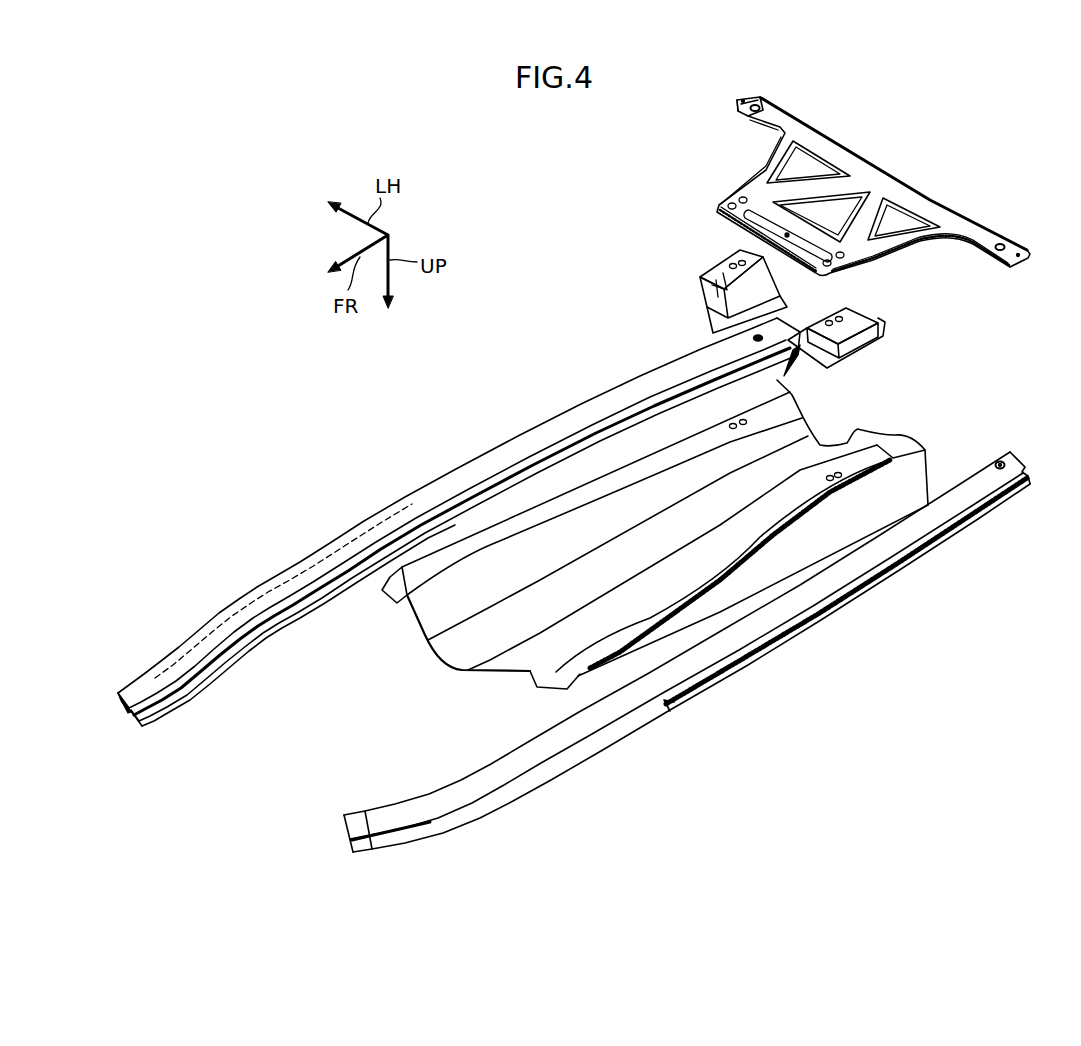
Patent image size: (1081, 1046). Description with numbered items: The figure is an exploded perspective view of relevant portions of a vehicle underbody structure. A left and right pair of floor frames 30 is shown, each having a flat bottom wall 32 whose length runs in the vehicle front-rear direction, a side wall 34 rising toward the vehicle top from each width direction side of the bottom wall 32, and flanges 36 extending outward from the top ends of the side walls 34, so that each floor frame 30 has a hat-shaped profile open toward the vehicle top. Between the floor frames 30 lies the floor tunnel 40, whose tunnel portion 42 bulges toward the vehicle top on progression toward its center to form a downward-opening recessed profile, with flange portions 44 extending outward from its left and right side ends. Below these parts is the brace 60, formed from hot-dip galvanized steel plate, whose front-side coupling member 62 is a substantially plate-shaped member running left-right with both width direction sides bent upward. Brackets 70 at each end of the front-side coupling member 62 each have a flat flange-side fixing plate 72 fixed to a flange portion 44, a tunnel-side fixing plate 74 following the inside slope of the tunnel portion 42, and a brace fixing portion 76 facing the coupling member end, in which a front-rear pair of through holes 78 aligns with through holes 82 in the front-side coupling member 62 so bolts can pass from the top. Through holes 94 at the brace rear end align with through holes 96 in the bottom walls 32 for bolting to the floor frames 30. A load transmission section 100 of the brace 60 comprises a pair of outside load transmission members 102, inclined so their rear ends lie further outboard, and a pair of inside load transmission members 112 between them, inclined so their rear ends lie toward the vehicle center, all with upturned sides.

The floor frame 30 is at (302, 512).
The bottom wall 32 is at (250, 603).
The side wall 34 is at (121, 693).
The flange 36 is at (307, 605).
The floor tunnel 40 is at (398, 651).
The tunnel portion 42 is at (457, 666).
The flange portion 44 is at (447, 557).
The brace 60 is at (942, 132).
The front-side coupling member 62 is at (797, 240).
The bracket 70 is at (712, 253).
The flange-side fixing plate 72 is at (700, 273).
The tunnel-side fixing plate 74 is at (714, 332).
The brace fixing portion 76 is at (702, 280).
The through hole 78 is at (732, 260).
The through hole 82 is at (735, 203).
The through hole 94 is at (760, 107).
The through hole 96 is at (756, 340).
The load transmission section 100 is at (748, 140).
The outside load transmission member 102 is at (755, 162).
The inside load transmission member 112 is at (822, 188).